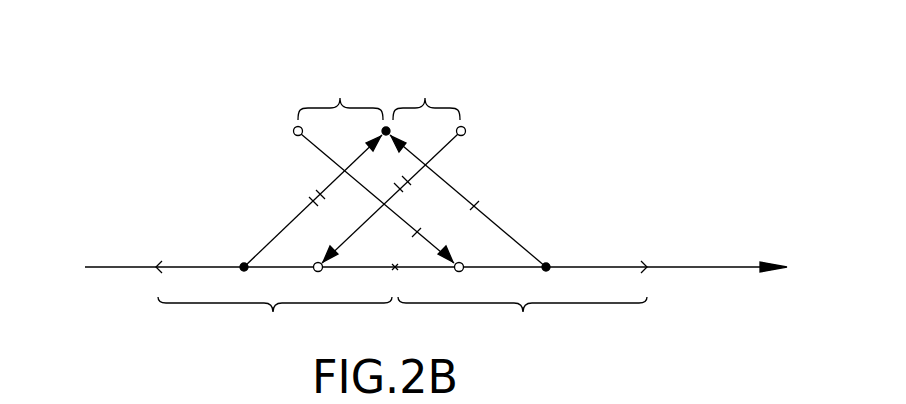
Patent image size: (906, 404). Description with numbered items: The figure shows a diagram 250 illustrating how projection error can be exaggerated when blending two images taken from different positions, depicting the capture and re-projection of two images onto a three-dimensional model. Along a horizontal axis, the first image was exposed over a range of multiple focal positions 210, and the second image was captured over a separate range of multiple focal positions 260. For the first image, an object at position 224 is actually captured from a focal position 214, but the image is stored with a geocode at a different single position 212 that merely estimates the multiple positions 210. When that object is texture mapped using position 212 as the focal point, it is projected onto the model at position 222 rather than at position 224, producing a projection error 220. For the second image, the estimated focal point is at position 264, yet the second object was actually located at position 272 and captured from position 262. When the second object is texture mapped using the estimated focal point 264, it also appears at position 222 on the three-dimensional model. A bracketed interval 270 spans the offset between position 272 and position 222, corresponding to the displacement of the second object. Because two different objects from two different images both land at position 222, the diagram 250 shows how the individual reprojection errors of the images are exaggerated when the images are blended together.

The diagram 250 is at (674, 53).
The first interval 270 is at (340, 97).
The projection error 220 is at (425, 98).
The projected position 222 is at (386, 127).
The second object position 272 is at (293, 133).
The object position 224 is at (466, 130).
The single position 212 is at (241, 264).
The focal position 214 is at (322, 270).
The capture position 262 is at (452, 266).
The estimated focal point 264 is at (547, 265).
The multiple focal positions 210 is at (275, 322).
The multiple focal positions 260 is at (522, 322).